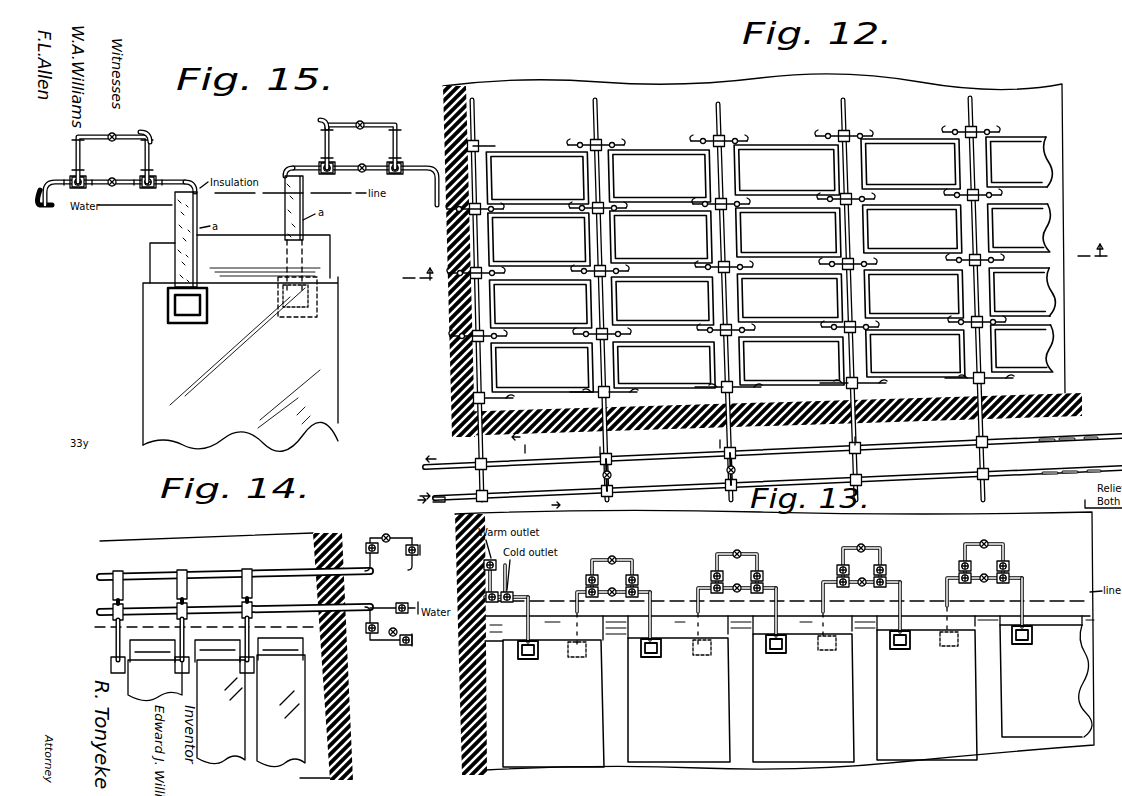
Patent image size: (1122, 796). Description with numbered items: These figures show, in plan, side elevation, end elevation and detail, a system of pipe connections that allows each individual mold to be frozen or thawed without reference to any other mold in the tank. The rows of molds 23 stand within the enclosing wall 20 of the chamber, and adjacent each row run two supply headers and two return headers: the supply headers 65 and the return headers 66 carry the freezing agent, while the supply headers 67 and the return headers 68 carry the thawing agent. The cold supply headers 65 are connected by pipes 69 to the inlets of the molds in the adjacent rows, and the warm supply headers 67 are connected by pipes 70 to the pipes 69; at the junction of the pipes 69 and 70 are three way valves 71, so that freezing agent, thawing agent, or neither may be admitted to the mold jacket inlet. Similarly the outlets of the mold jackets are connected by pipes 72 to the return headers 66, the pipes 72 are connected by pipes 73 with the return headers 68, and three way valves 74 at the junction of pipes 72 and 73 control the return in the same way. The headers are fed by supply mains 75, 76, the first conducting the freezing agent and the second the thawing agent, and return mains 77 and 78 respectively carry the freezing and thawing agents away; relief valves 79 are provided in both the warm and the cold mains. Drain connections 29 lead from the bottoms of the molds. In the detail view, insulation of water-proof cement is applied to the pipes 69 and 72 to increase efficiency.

In FIG. 12, the wall of chamber 20 is at (450, 386).
In FIG. 13, the wall of chamber 20 is at (458, 754).
In FIG. 14, the wall of chamber 20 is at (352, 752).
In FIG. 12, the tank 23 is at (772, 264).
In FIG. 13, the tank 23 is at (789, 684).
In FIG. 14, the tank 23 is at (204, 697).
In FIG. 15, the tank 23 is at (240, 343).
In FIG. 12, the drain connection 29 is at (681, 390).
In FIG. 12, the supply header 65 is at (610, 476).
In FIG. 13, the supply header 65 is at (610, 596).
In FIG. 14, the supply header 65 is at (403, 602).
In FIG. 15, the supply header 65 is at (362, 163).
In FIG. 12, the return header 66 is at (735, 474).
In FIG. 13, the return header 66 is at (753, 613).
In FIG. 14, the return header 66 is at (300, 608).
In FIG. 15, the return header 66 is at (114, 187).
In FIG. 12, the supply header 67 is at (606, 124).
In FIG. 13, the supply header 67 is at (617, 556).
In FIG. 14, the supply header 67 is at (375, 605).
In FIG. 15, the supply header 67 is at (362, 121).
In FIG. 12, the return header 68 is at (478, 133).
In FIG. 13, the return header 68 is at (741, 552).
In FIG. 14, the return header 68 is at (290, 568).
In FIG. 15, the return header 68 is at (112, 157).
In FIG. 13, the pipe 69 is at (652, 600).
In FIG. 15, the pipe 69 is at (285, 168).
In FIG. 13, the pipe 70 is at (587, 580).
In FIG. 15, the pipe 70 is at (318, 124).
In FIG. 13, the three way valve 71 is at (676, 553).
In FIG. 15, the three way valve 71 is at (320, 160).
In FIG. 13, the pipe 72 is at (535, 605).
In FIG. 14, the pipe 72 is at (252, 618).
In FIG. 15, the pipe 72 is at (192, 182).
In FIG. 13, the pipe 73 is at (498, 578).
In FIG. 14, the pipe 73 is at (252, 597).
In FIG. 15, the pipe 73 is at (150, 136).
In FIG. 13, the three way valve 74 is at (510, 594).
In FIG. 15, the three way valve 74 is at (74, 176).
In FIG. 12, the supply main 75 is at (1058, 472).
In FIG. 14, the supply main 75 is at (408, 646).
In FIG. 12, the supply main 76 is at (549, 496).
In FIG. 14, the supply main 76 is at (410, 536).
In FIG. 12, the return main 77 is at (1060, 439).
In FIG. 14, the return main 77 is at (372, 636).
In FIG. 12, the return main 78 is at (545, 456).
In FIG. 14, the return main 78 is at (370, 534).
In FIG. 14, the relief valve 79 is at (388, 530).